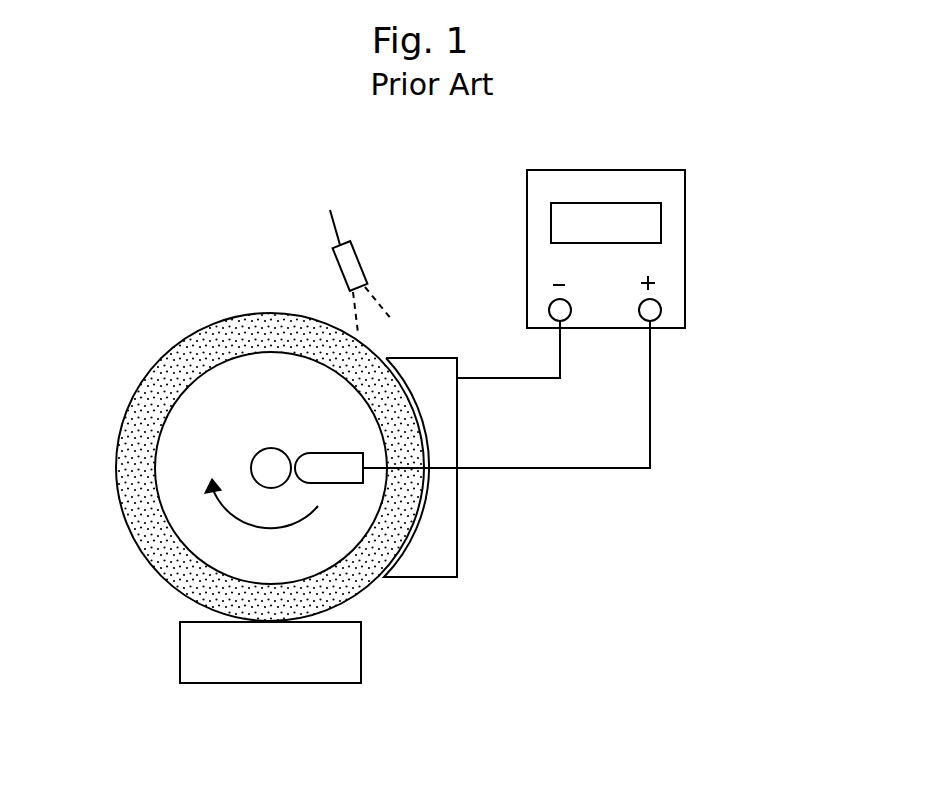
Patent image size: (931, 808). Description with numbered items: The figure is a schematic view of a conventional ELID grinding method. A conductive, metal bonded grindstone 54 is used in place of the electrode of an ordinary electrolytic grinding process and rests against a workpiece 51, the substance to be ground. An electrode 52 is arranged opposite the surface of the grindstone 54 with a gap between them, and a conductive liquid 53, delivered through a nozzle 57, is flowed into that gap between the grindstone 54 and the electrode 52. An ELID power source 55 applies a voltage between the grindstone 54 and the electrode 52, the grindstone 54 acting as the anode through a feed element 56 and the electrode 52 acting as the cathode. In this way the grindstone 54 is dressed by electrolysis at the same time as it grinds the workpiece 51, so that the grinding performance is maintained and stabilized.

The workpiece 51 is at (253, 672).
The electrode 52 is at (440, 532).
The conductive liquid 53 is at (372, 310).
The conductive grindstone 54 is at (160, 388).
The ELID power source 55 is at (673, 252).
The feed element 56 is at (317, 466).
The nozzle 57 is at (348, 263).